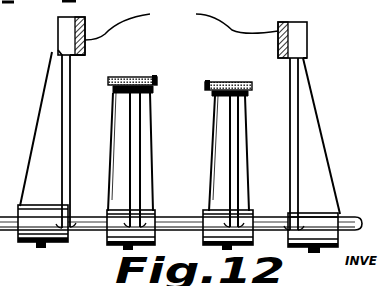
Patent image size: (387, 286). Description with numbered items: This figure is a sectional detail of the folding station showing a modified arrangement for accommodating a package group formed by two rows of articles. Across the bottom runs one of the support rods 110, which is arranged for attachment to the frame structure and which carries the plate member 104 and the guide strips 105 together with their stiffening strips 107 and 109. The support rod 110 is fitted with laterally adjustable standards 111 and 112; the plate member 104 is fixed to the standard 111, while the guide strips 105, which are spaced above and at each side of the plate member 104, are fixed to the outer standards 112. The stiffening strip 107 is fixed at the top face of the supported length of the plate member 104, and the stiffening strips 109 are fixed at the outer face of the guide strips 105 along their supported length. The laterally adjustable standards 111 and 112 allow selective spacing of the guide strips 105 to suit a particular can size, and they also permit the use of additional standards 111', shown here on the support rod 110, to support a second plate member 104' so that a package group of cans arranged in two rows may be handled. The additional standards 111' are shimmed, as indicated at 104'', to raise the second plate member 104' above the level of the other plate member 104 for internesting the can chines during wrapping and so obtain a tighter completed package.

The plate member 104 is at (211, 143).
The second plate member 104' is at (127, 65).
The shim 104'' is at (114, 156).
The guide strips 105 is at (181, 22).
The stiffening strip 107 is at (228, 81).
The stiffening strips 109 is at (284, 23).
The support rods 110 is at (88, 232).
The laterally adjustable standards 111 is at (246, 153).
The additional standards 111' is at (114, 152).
The laterally adjustable standards 112 is at (43, 89).